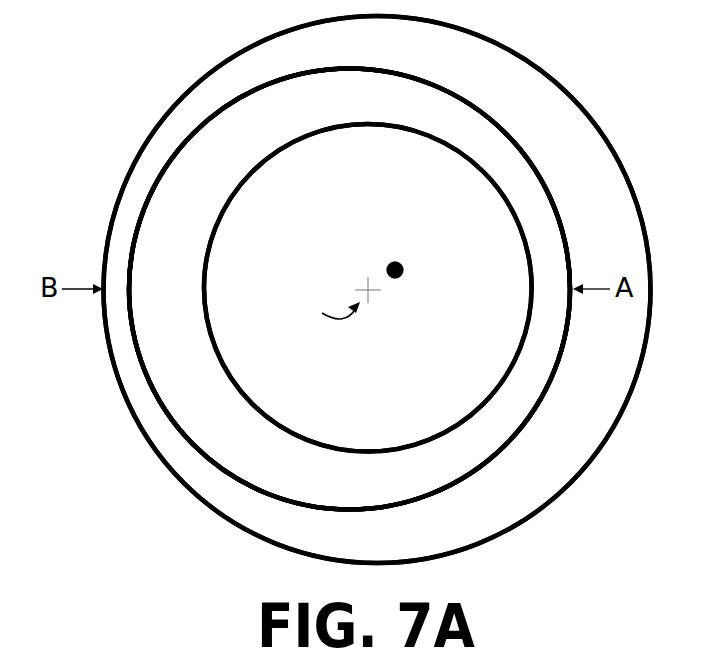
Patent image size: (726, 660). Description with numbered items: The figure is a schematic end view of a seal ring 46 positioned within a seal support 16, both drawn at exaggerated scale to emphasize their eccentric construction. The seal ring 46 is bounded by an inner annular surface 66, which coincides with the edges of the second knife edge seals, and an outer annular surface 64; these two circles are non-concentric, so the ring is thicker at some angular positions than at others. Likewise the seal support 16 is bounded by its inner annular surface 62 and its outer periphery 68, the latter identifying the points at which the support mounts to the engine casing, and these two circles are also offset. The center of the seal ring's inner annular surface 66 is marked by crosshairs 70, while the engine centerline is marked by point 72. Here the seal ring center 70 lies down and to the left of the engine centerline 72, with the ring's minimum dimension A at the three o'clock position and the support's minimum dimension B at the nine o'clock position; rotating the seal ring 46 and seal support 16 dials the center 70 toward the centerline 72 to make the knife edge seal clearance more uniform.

The seal support 16 is at (152, 418).
The seal ring 46 is at (520, 400).
The inner annular surface 62 is at (138, 343).
The outer annular surface 64 is at (523, 432).
The inner annular surface 66 is at (525, 332).
The outer periphery 68 is at (168, 470).
The crosshairs 70 is at (324, 308).
The point 72 is at (388, 264).